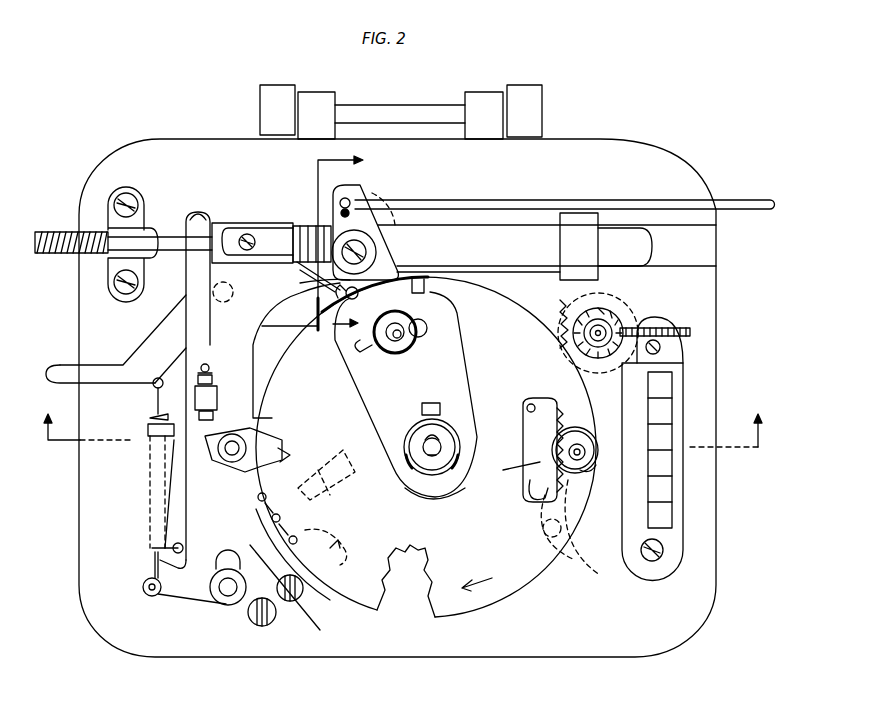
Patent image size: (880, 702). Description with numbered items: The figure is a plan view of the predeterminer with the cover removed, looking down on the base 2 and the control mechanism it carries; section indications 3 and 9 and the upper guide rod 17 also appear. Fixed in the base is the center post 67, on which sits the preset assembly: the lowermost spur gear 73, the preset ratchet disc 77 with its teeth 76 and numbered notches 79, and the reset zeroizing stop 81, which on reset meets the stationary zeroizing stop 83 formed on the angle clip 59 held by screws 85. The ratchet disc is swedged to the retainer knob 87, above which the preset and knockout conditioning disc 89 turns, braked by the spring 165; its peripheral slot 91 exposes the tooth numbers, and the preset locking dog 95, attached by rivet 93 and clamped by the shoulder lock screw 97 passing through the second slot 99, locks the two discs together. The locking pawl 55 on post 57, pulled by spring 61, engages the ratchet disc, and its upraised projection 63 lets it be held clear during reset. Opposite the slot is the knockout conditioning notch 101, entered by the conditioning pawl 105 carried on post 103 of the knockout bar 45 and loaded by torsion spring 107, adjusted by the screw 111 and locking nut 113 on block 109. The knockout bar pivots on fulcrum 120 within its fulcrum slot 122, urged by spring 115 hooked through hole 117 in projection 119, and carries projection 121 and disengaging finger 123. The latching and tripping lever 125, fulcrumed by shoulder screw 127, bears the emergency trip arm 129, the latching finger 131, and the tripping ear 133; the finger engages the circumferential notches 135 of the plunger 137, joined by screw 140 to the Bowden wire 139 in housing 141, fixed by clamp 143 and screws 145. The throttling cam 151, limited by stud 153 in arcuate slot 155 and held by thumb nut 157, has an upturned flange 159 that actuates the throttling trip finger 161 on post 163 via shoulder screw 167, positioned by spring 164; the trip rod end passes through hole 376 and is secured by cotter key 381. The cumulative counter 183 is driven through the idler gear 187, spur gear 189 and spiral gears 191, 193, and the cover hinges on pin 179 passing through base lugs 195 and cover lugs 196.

The base 2 is at (704, 606).
The section line 3- 3 is at (402, 421).
The section line 9- 9 is at (347, 244).
The guide rod 17 is at (622, 205).
The knockout bar 45 is at (246, 347).
The locking pawl 55 is at (180, 522).
The post 57 is at (162, 552).
The angle clip 59 is at (308, 580).
The spring 61 is at (258, 530).
The upraised projection 63 is at (152, 450).
The center post 67 is at (438, 425).
The spur gear 73 is at (406, 581).
The teeth 76 is at (548, 430).
The preset ratchet disc 77 is at (540, 480).
The numbered notches 79 is at (520, 428).
The reset zeroizing stop 81 is at (340, 478).
The stationary zeroizing stop 83 is at (320, 545).
The screws 85 is at (275, 618).
The retainer knob 87 is at (410, 428).
The preset and knockout conditioning disc 89 is at (532, 568).
The peripheral slot 91 is at (525, 472).
The rivet 93 is at (560, 545).
The preset locking dog 95 is at (565, 525).
The shoulder lock screw 97 is at (588, 466).
The second slot 99 is at (585, 440).
The knockout conditioning notch 101 is at (278, 462).
The post 103 is at (240, 420).
The conditioning pawl 105 is at (283, 447).
The torsion spring 107 is at (265, 432).
The block 109 is at (214, 395).
The screw 111 is at (200, 372).
The locking nut 113 is at (211, 380).
The spring 115 is at (155, 512).
The hole 117 is at (148, 594).
The projection 119 is at (168, 598).
The fulcrum 120 is at (228, 598).
The projection 121 is at (312, 287).
The fulcrum slot 122 is at (228, 560).
The disengaging finger 123 is at (200, 216).
The latching and tripping lever 125 is at (165, 338).
The shoulder screw 127 is at (213, 292).
The emergency trip arm 129 is at (58, 370).
The latching finger 131 is at (298, 266).
The tripping ear 133 is at (315, 323).
The circumferential notches 135 is at (296, 222).
The plunger 137 is at (440, 233).
The Bowden wire 139 is at (163, 228).
The screw 140 is at (245, 225).
The housing 141 is at (68, 256).
The clamp 143 is at (140, 218).
The screws 145 is at (130, 192).
The throttling cam 151 is at (448, 372).
The stud 153 is at (408, 348).
The arcuate slot 155 is at (358, 350).
The locking thumb nut 157 is at (395, 348).
The upturned flange 159 is at (425, 286).
The throttling trip finger 161 is at (395, 270).
The post 163 is at (399, 197).
The spring 164 is at (310, 283).
The spring 165 is at (448, 482).
The shoulder screw 167 is at (370, 252).
The pin 179 is at (383, 112).
The cumulative counter 183 is at (665, 418).
The idler gear 187 is at (548, 312).
The spur gear 189 is at (603, 296).
The spiral gear 191 is at (615, 320).
The spiral gear 193 is at (668, 328).
The lugs 195 is at (330, 100).
The lugs 196 is at (267, 98).
The hole 376 is at (355, 220).
The cotter key 381 is at (352, 200).